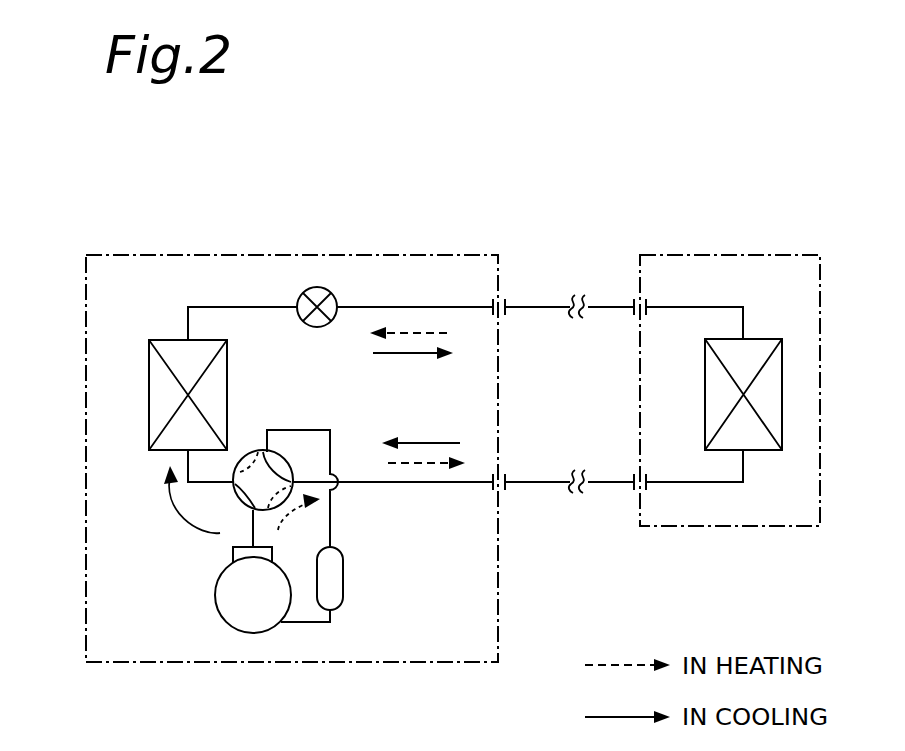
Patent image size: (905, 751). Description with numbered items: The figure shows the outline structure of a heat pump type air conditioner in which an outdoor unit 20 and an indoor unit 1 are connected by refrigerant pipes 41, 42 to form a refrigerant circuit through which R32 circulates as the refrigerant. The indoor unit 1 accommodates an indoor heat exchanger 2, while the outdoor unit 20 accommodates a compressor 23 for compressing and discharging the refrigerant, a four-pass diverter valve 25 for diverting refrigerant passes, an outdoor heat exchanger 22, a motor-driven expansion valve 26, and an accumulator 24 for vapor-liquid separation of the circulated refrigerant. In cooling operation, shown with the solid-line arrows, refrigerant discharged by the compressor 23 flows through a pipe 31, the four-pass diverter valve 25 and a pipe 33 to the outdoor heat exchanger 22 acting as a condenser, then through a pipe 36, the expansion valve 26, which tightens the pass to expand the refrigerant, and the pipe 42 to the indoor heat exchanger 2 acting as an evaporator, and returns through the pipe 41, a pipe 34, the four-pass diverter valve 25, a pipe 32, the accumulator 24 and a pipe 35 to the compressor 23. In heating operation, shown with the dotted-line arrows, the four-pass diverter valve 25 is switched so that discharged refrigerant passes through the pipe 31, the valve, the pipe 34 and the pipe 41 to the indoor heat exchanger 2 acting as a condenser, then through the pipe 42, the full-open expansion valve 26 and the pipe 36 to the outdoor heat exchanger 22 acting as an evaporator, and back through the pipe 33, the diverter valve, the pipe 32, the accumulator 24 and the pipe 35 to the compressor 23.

The indoor unit 1 is at (830, 253).
The indoor heat exchanger 2 is at (782, 400).
The outdoor unit 20 is at (307, 254).
The outdoor heat exchanger 22 is at (149, 398).
The compressor 23 is at (253, 633).
The accumulator 24 is at (343, 578).
The four-pass diverter valve 25 is at (253, 452).
The motor-driven expansion valve 26 is at (320, 327).
The pipe 31 is at (253, 532).
The pipe 32 is at (298, 430).
The pipe 33 is at (188, 467).
The pipe 34 is at (434, 482).
The pipe 35 is at (310, 622).
The pipe 36 is at (247, 307).
The refrigerant pipe 41 is at (535, 482).
The refrigerant pipe 42 is at (537, 307).